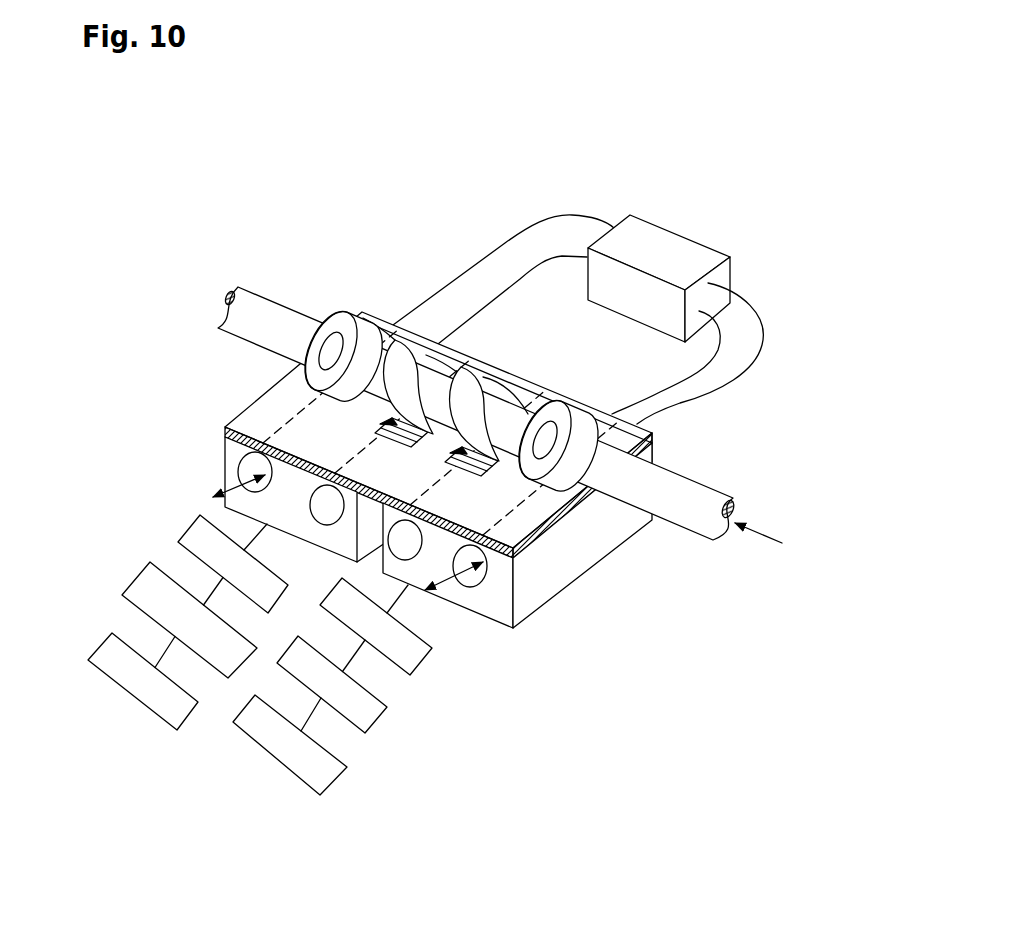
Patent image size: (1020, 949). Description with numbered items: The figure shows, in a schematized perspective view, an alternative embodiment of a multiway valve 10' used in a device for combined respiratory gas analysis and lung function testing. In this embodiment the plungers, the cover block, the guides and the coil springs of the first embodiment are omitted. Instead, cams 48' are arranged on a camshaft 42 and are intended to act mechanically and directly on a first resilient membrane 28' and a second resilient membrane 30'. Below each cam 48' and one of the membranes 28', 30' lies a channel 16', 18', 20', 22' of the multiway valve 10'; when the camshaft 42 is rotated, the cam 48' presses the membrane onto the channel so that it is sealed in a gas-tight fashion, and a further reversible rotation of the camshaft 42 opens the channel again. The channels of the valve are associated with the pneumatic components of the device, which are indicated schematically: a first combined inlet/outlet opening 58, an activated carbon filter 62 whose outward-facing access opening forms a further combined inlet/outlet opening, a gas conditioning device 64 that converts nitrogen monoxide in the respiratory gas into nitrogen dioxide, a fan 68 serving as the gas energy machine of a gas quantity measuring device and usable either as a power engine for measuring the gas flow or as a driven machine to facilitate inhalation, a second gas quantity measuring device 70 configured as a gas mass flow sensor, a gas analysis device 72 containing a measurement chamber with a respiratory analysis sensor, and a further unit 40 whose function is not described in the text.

The multiway valve 10' is at (391, 348).
The channel 16' is at (211, 467).
The channel 18' is at (262, 499).
The channel 20' is at (437, 606).
The channel 22' is at (469, 588).
The first resilient membrane 28' is at (401, 435).
The second resilient membrane 30' is at (582, 535).
The unit 40 is at (290, 745).
The camshaft 42 is at (686, 506).
The cam 48' is at (446, 362).
The first combined inlet/outlet opening 58 is at (143, 681).
The activated carbon filter 62 is at (332, 684).
The gas conditioning device 64 is at (233, 564).
The fan 68 is at (376, 626).
The second gas quantity measuring device 70 is at (189, 620).
The gas analysis device 72 is at (719, 255).